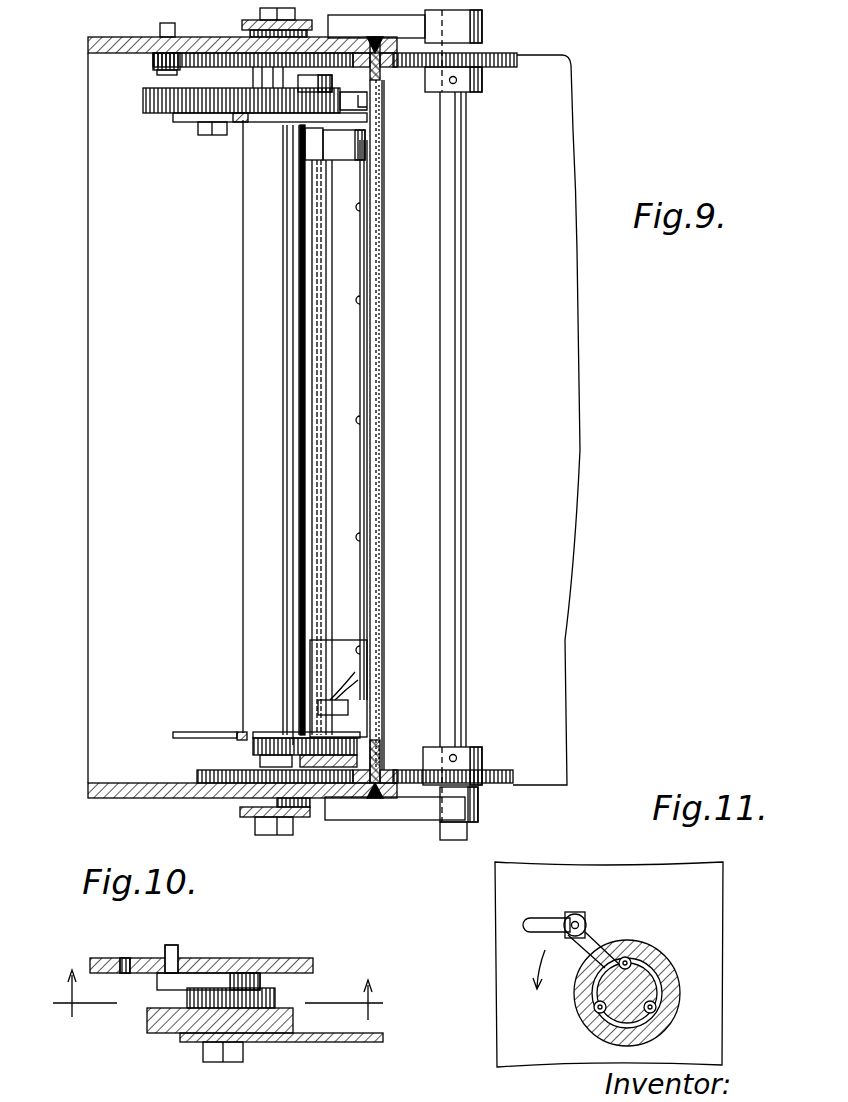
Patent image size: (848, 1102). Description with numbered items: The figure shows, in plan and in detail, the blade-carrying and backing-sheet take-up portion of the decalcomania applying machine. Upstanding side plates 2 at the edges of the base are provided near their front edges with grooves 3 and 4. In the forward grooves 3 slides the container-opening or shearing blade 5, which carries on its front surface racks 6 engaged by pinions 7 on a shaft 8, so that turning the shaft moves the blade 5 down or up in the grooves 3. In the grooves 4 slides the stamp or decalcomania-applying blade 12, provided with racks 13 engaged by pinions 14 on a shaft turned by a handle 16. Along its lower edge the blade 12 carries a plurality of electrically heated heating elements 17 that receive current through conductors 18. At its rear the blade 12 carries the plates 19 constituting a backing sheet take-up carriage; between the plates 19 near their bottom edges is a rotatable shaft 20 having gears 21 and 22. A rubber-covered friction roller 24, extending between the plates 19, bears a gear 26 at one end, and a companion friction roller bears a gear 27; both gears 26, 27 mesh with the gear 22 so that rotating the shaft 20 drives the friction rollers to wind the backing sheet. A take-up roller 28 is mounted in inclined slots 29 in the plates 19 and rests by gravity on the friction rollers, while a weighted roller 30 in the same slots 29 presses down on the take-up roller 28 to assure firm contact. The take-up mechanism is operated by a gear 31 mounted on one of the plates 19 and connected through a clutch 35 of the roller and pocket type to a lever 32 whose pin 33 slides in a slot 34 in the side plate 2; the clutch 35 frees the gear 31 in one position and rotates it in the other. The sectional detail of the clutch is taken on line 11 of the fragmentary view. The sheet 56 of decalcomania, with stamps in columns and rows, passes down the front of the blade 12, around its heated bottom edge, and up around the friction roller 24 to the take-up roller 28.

In FIG. 9, the side plates 2 is at (88, 45).
In FIG. 10, the side plates 2 is at (296, 958).
In FIG. 11, the side plates 2 is at (503, 905).
In FIG. 9, the grooves 3 is at (385, 45).
In FIG. 9, the grooves 4 is at (375, 42).
In FIG. 9, the container-opening or shearing blade 5 is at (383, 292).
In FIG. 9, the racks 6 is at (387, 70).
In FIG. 9, the pinions 7 is at (515, 66).
In FIG. 9, the shaft 8 is at (470, 200).
In FIG. 10, the line 11— 11 is at (220, 995).
In FIG. 9, the stamp or decalcomania-applying blade 12 is at (372, 173).
In FIG. 9, the racks 13 is at (372, 40).
In FIG. 9, the pinions 14 is at (240, 58).
In FIG. 9, the handle 16 is at (242, 23).
In FIG. 9, the heating elements 17 is at (362, 351).
In FIG. 9, the conductors 18 is at (358, 690).
In FIG. 9, the plates 19 is at (182, 124).
In FIG. 10, the plates 19 is at (325, 1042).
In FIG. 9, the rotatable shaft 20 is at (300, 83).
In FIG. 9, the gear 21 is at (342, 93).
In FIG. 9, the gear 22 is at (293, 735).
In FIG. 9, the friction roller 24 is at (356, 148).
In FIG. 9, the gear 26 is at (340, 738).
In FIG. 9, the gear 27 is at (255, 746).
In FIG. 9, the take-up roller 28 is at (312, 150).
In FIG. 9, the inclined slots 29 is at (241, 124).
In FIG. 9, the weighted roller 30 is at (255, 458).
In FIG. 9, the gear 31 is at (157, 116).
In FIG. 10, the gear 31 is at (293, 1022).
In FIG. 11, the gear 31 is at (680, 990).
In FIG. 9, the lever 32 is at (153, 63).
In FIG. 10, the lever 32 is at (160, 980).
In FIG. 11, the lever 32 is at (600, 945).
In FIG. 9, the pin 33 is at (160, 30).
In FIG. 10, the pin 33 is at (178, 950).
In FIG. 11, the pin 33 is at (587, 920).
In FIG. 10, the slot 34 is at (130, 958).
In FIG. 11, the slot 34 is at (560, 918).
In FIG. 10, the clutch 35 is at (275, 996).
In FIG. 11, the clutch 35 is at (648, 970).
In FIG. 9, the sheet 56 is at (380, 492).